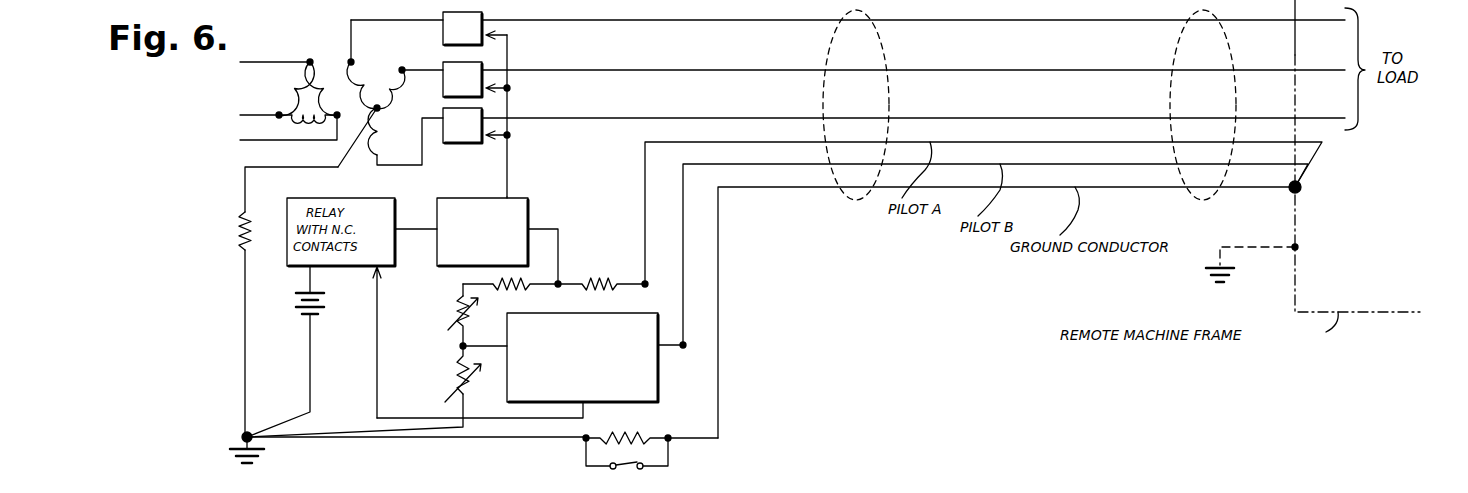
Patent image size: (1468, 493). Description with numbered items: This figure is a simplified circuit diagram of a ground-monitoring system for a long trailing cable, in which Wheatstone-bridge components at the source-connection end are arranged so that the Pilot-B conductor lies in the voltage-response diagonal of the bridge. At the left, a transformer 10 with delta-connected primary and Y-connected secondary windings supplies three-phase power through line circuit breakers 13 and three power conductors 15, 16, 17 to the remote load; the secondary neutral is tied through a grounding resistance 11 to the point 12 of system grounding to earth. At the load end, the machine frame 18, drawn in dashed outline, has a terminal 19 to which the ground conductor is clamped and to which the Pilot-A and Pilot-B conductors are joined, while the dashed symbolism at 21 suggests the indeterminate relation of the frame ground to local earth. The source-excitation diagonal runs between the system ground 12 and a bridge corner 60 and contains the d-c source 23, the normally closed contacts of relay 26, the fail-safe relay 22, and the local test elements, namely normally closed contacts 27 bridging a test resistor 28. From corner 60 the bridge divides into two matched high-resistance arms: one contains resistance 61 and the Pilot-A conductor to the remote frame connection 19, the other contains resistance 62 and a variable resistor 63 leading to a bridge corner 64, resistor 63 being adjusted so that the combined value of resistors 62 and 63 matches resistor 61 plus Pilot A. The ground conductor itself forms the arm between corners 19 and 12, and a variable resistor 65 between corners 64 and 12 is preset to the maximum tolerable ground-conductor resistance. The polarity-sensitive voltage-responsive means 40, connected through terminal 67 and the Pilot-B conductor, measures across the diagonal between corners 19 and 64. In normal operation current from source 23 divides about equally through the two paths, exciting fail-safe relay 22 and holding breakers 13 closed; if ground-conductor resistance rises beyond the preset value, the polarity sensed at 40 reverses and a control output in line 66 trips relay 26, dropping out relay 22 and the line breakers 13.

The transformer 10 is at (336, 51).
The grounding resistance 11 is at (240, 220).
The point of system-grounding 12 is at (245, 436).
The line circuit breakers 13 is at (443, 33).
The power conductor 15 is at (596, 26).
The power conductor 16 is at (596, 76).
The power conductor 17 is at (594, 124).
The machine frame 18 is at (1295, 93).
The terminal 19 is at (1302, 186).
The dashed-line symbolism 21 is at (1238, 245).
The fail-safe relay 22 is at (442, 196).
The d-c source 23 is at (293, 296).
The relay with normally closed contacts 26 is at (368, 178).
The normally closed contacts 27 is at (672, 472).
The test resistor 28 is at (628, 430).
The polarity-sensitive voltage-responsive means 40 is at (660, 392).
The bridge corner 60 is at (560, 282).
The resistance 61 is at (600, 282).
The resistance 62 is at (492, 275).
The variable resistor 63 is at (462, 304).
The bridge corner 64 is at (460, 346).
The variable resistor 65 is at (458, 368).
The line 66 is at (403, 418).
The first bridge-excitation terminal 67 is at (682, 348).